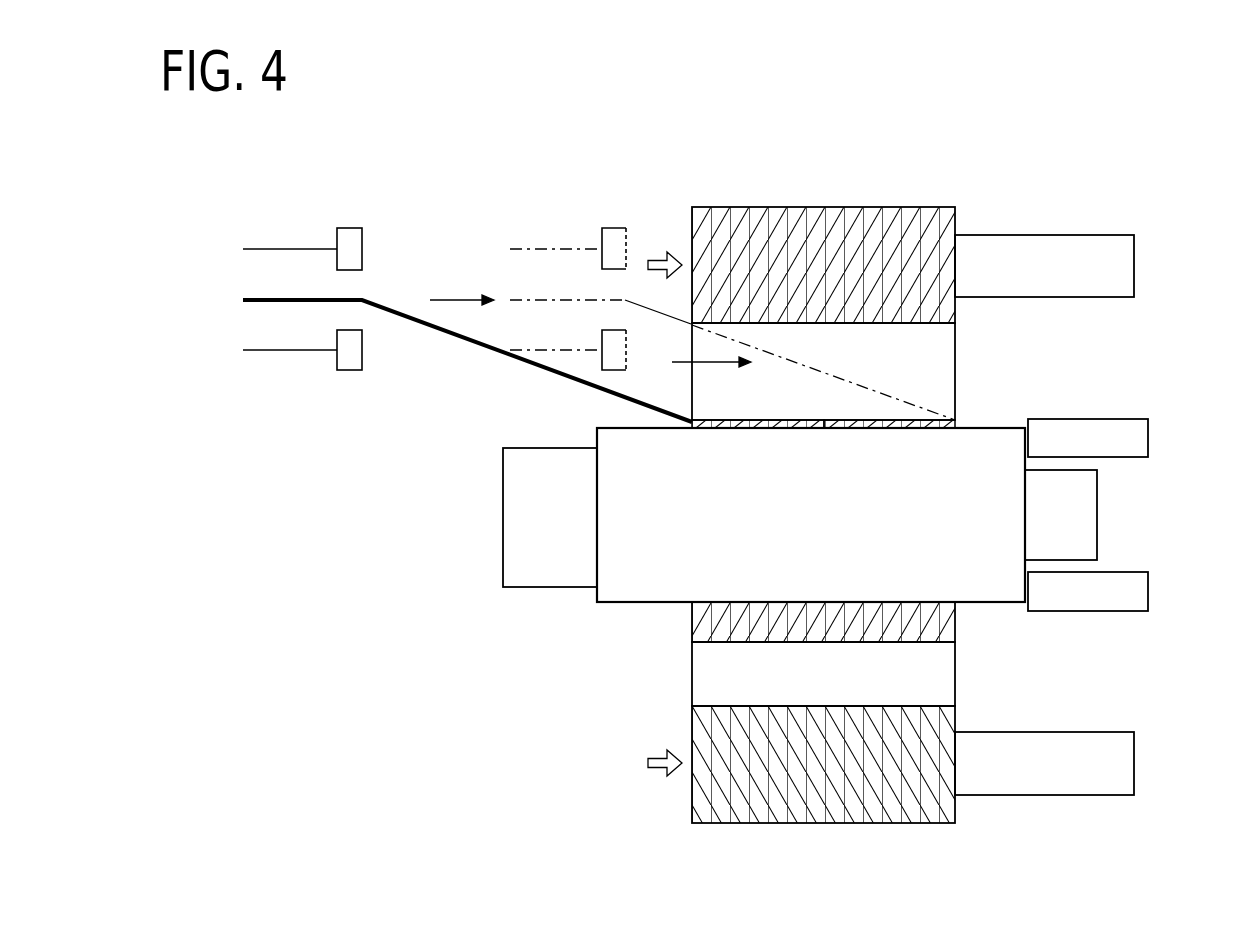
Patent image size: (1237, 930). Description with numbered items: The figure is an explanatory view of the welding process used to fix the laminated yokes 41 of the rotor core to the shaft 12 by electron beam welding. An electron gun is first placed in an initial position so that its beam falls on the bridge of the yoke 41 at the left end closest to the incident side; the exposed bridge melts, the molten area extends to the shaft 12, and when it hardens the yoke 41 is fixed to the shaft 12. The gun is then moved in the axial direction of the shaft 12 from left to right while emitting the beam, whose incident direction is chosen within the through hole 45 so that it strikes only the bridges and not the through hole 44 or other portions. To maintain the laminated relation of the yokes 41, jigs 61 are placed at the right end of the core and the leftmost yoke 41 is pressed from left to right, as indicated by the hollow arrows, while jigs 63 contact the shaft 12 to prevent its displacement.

The shaft 12 is at (817, 530).
The yoke 41 is at (928, 213).
The through hole 44 is at (925, 706).
The through hole 45 is at (885, 420).
The jig 61 is at (1127, 270).
The jig 63 is at (1138, 434).